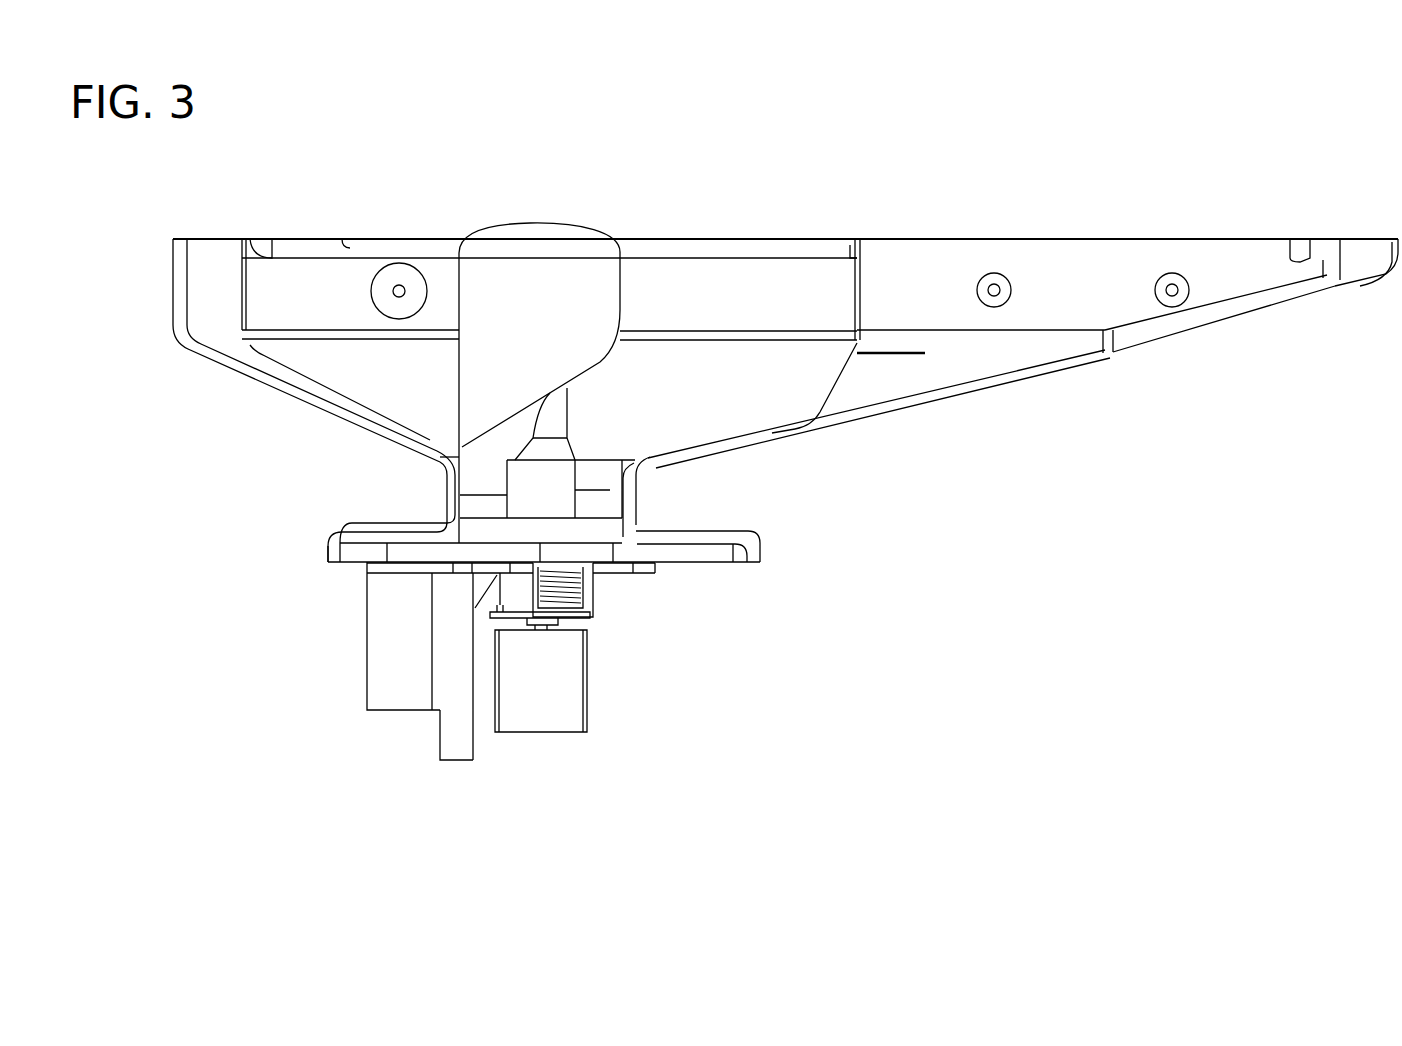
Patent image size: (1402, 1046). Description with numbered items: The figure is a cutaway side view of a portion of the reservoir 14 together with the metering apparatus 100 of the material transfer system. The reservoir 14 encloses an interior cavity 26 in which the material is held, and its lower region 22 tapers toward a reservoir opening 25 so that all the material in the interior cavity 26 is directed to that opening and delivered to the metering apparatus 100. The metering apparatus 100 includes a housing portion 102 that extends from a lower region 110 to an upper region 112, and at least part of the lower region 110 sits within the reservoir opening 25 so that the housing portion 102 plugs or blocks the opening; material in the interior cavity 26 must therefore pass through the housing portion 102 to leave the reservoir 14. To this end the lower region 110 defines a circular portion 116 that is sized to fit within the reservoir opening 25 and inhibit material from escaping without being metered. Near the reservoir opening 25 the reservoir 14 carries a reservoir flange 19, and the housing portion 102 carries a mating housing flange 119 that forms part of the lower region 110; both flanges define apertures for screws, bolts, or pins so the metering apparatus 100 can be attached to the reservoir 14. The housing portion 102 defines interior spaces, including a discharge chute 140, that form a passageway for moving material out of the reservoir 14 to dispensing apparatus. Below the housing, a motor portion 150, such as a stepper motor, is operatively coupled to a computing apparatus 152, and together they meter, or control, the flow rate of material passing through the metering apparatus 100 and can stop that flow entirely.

The reservoir 14 is at (163, 271).
The interior cavity 26 is at (376, 318).
The upper region 112 is at (527, 247).
The housing portion 102 is at (570, 310).
The metering apparatus 100 is at (604, 406).
The lower region 22 is at (925, 398).
The lower region 110 is at (460, 515).
The reservoir flange 19 is at (382, 533).
The housing flange 119 is at (370, 553).
The computing apparatus 152 is at (388, 680).
The discharge chute 140 is at (458, 742).
The motor portion 150 is at (568, 673).
The reservoir opening 25 is at (622, 518).
The circular portion 116 is at (612, 528).